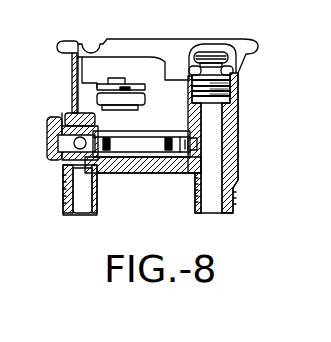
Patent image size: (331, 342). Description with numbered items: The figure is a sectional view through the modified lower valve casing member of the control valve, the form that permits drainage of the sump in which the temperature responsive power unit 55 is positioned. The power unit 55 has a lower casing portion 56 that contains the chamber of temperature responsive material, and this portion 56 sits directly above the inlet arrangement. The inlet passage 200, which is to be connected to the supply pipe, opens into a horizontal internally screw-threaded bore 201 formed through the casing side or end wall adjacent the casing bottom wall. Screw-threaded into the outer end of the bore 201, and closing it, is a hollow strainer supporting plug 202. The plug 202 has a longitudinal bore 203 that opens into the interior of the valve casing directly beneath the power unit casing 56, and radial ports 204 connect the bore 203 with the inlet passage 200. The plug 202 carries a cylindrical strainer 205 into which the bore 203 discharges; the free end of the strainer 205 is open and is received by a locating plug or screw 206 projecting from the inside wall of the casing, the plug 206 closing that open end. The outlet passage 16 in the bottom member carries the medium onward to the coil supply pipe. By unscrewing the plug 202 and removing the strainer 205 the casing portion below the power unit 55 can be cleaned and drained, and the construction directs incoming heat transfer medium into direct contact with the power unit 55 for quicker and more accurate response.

The outlet passage 16 is at (215, 181).
The temperature responsive power unit 55 is at (90, 96).
The lower casing portion 56 is at (143, 106).
The inlet passage 200 is at (76, 193).
The internally screw-threaded bore 201 is at (72, 118).
The strainer supporting plug 202 is at (47, 146).
The longitudinal bore 203 is at (108, 151).
The radial ports 204 is at (78, 158).
The cylindrical strainer 205 is at (152, 157).
The locating plug 206 is at (174, 142).